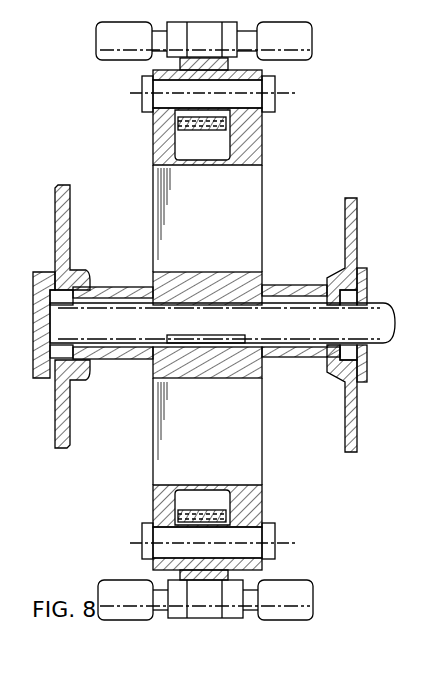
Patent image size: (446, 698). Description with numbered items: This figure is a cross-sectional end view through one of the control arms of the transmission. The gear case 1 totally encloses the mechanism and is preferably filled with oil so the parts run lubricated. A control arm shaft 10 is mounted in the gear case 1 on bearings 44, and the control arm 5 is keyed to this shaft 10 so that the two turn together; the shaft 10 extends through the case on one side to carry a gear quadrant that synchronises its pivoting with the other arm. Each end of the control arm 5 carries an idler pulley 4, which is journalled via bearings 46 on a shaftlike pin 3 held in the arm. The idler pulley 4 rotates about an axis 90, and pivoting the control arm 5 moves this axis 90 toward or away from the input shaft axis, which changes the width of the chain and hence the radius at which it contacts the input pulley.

The gear case 1 is at (70, 252).
The shaftlike pin 3 is at (141, 102).
The idler pulley 4 is at (218, 131).
The control arm 5 is at (264, 224).
The control arm shaft 10 is at (297, 337).
The bearing 44 is at (90, 287).
The bearing 46 is at (152, 152).
The axis 90 is at (288, 93).